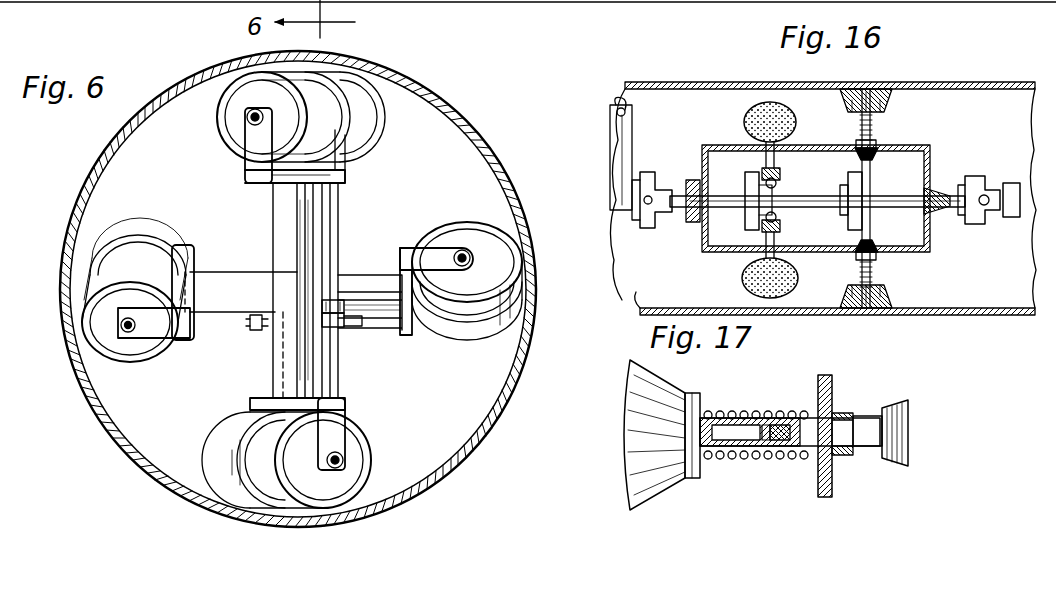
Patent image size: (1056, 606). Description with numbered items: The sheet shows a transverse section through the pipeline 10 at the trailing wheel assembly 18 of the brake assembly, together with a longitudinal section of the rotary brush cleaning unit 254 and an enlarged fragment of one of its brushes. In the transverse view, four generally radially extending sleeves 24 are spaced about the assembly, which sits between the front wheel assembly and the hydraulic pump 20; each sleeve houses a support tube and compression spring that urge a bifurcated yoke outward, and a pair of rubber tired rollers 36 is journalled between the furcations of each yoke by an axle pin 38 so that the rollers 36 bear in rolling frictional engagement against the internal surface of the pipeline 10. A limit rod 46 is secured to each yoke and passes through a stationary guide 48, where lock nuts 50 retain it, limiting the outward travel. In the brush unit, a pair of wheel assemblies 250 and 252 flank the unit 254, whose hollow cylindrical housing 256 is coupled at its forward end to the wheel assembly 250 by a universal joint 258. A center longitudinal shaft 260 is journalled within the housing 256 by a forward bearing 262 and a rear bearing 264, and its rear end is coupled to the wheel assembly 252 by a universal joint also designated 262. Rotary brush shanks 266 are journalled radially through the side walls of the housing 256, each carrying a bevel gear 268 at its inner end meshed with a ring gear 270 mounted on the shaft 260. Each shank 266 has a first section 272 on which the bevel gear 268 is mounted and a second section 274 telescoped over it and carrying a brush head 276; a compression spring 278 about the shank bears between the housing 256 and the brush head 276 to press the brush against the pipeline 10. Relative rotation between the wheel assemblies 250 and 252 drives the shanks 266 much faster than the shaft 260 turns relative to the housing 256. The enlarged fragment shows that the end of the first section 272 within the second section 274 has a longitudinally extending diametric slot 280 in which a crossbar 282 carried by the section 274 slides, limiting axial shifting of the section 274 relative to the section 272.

In FIG. 6, the pipeline 10 is at (457, 98).
In FIG. 6, the trailing wheel assembly 18 is at (70, 0).
In FIG. 6, the hydraulic pump 20 is at (539, 27).
In FIG. 6, the sleeve 24 is at (236, 278).
In FIG. 6, the rubber tired roller 36 is at (500, 263).
In FIG. 6, the axle pin 38 is at (461, 250).
In FIG. 6, the limit rod 46 is at (333, 232).
In FIG. 6, the stationary guide 48 is at (340, 302).
In FIG. 6, the lock nut 50 is at (348, 327).
In FIG. 16, the wheel assembly 250 is at (1006, 224).
In FIG. 16, the wheel assembly 252 is at (640, 252).
In FIG. 16, the rotary brush cleaning unit 254 is at (826, 274).
In FIG. 16, the hollow cylindrical housing 256 is at (922, 250).
In FIG. 17, the hollow cylindrical housing 256 is at (832, 393).
In FIG. 16, the universal joint 258 is at (968, 195).
In FIG. 16, the center longitudinal shaft 260 is at (708, 196).
In FIG. 16, the forward bearing 262 is at (670, 178).
In FIG. 16, the rear bearing 264 is at (690, 222).
In FIG. 16, the rotary brush shank 266 is at (775, 175).
In FIG. 17, the rotary brush shank 266 is at (758, 418).
In FIG. 16, the bevel gear 268 is at (775, 182).
In FIG. 17, the bevel gear 268 is at (905, 412).
In FIG. 16, the ring gear 270 is at (741, 265).
In FIG. 17, the first section 272 is at (842, 456).
In FIG. 17, the second section 274 is at (745, 448).
In FIG. 16, the brush head 276 is at (766, 102).
In FIG. 17, the brush head 276 is at (632, 470).
In FIG. 17, the compression spring 278 is at (724, 412).
In FIG. 17, the diametric slot 280 is at (776, 448).
In FIG. 17, the crossbar 282 is at (762, 452).